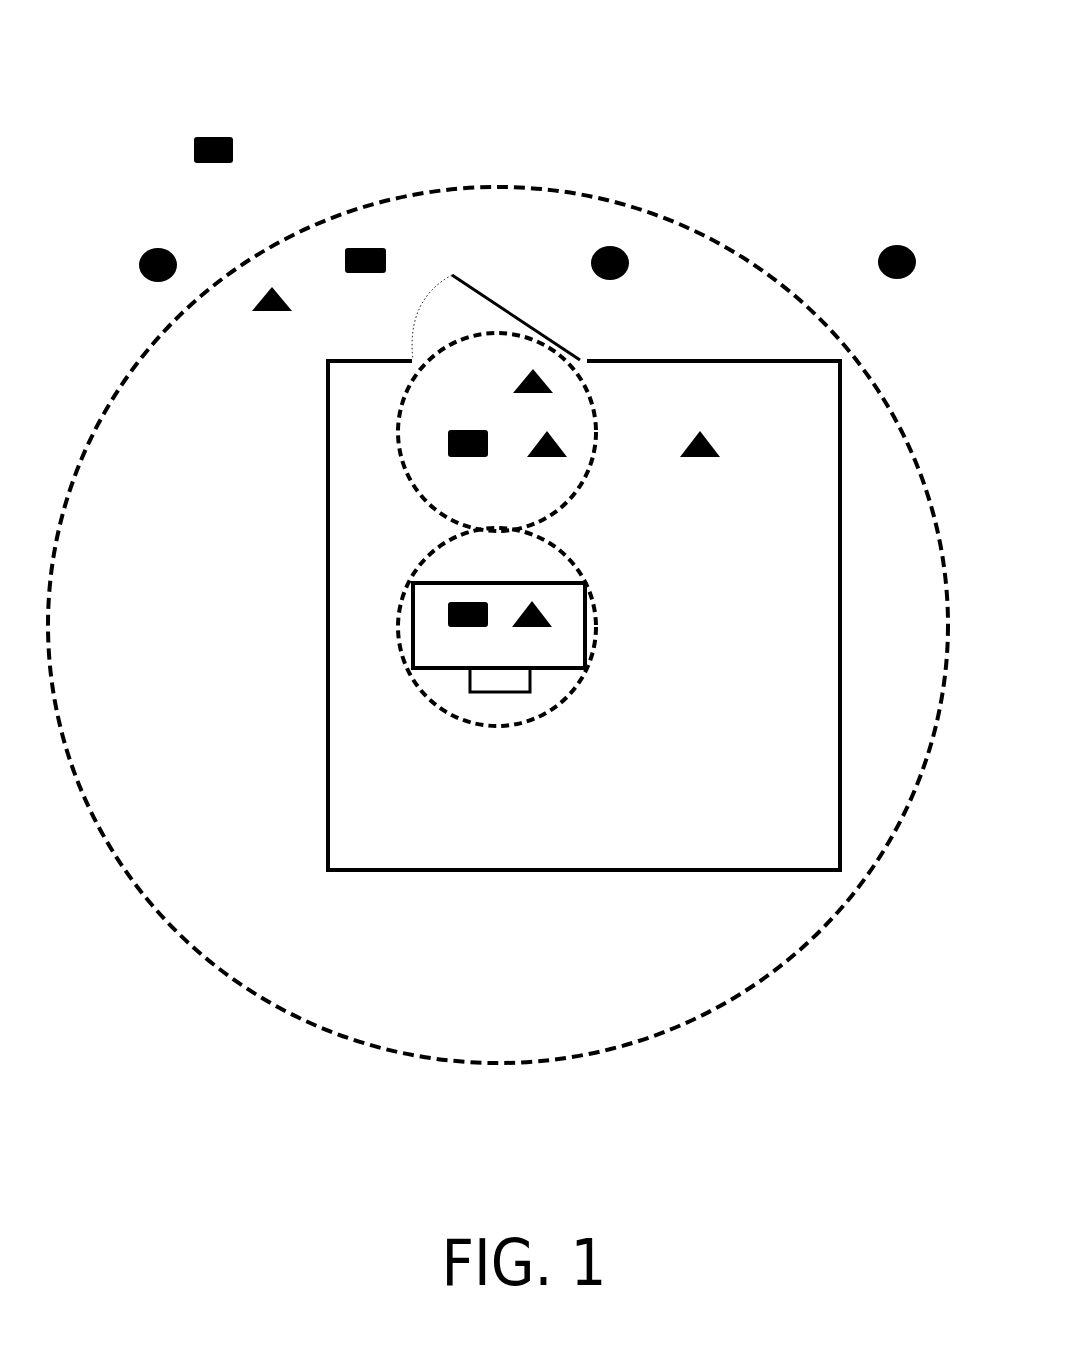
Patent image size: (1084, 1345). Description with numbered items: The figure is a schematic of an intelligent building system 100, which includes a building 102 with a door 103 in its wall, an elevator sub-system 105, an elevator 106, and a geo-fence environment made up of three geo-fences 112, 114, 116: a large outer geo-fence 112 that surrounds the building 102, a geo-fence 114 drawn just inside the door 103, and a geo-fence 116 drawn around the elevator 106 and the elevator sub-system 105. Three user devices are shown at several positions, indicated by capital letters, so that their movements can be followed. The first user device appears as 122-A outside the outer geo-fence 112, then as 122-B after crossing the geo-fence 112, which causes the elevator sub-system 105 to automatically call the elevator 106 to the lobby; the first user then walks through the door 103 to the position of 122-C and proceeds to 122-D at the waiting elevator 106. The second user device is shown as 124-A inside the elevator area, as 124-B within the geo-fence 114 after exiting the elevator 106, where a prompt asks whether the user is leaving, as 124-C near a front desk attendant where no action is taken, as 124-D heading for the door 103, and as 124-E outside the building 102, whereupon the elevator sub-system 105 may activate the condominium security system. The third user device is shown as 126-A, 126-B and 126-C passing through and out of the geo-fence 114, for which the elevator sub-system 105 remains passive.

The intelligent building system 100 is at (412, 33).
The building 102 is at (358, 872).
The door 103 is at (508, 310).
The elevator sub-system 105 is at (485, 692).
The elevator 106 is at (577, 673).
The geo-fence 112 is at (405, 1052).
The geo-fence 114 is at (420, 492).
The geo-fence 116 is at (422, 690).
The first user device 122-A is at (198, 163).
The first user device 122-B is at (349, 273).
The first user device 122-C is at (452, 457).
The first user device 122-D is at (452, 627).
The second user device 124-A is at (530, 624).
The second user device 124-B is at (545, 454).
The second user device 124-C is at (698, 454).
The second user device 124-D is at (531, 390).
The second user device 124-E is at (270, 308).
The third user device 126-A is at (147, 280).
The third user device 126-B is at (599, 278).
The third user device 126-C is at (886, 277).